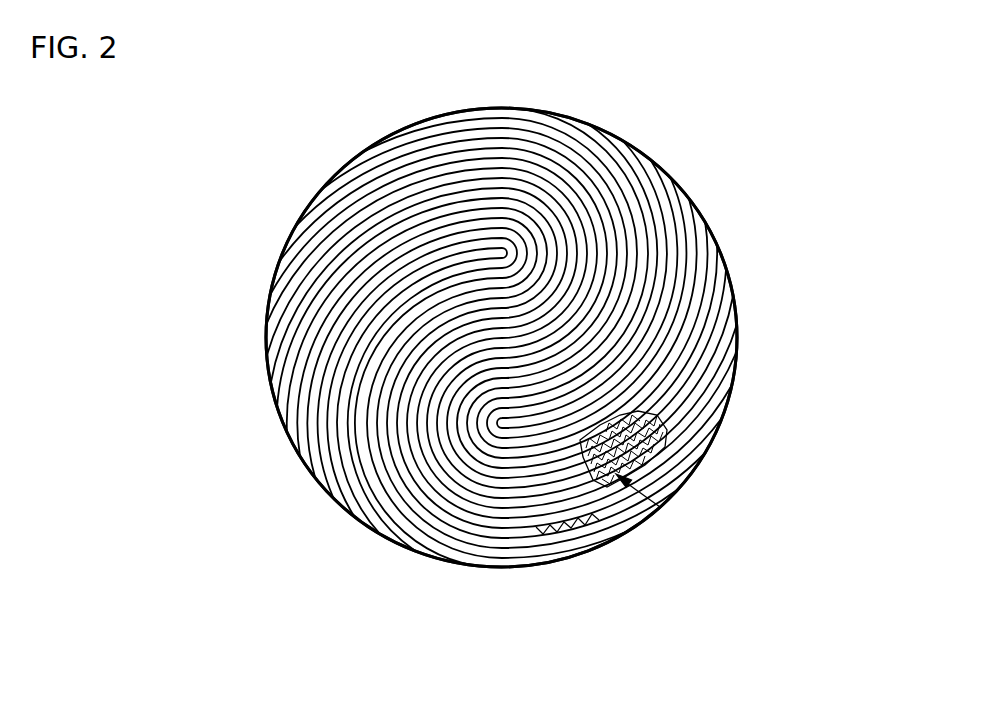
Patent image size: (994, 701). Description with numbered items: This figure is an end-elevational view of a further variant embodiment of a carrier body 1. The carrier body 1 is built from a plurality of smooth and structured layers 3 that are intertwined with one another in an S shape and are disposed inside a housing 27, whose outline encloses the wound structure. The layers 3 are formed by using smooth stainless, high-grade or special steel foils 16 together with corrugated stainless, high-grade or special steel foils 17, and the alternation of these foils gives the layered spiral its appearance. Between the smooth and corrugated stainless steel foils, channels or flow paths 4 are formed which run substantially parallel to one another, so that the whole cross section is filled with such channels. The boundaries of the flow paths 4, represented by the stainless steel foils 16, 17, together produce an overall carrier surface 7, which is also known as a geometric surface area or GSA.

The carrier body 1 is at (758, 128).
The layers 3 is at (300, 267).
The housing 27 is at (368, 147).
The flow paths 4 is at (650, 428).
The overall carrier surface 7 is at (660, 507).
The smooth stainless steel foils 16 is at (605, 521).
The corrugated stainless steel foils 17 is at (540, 535).